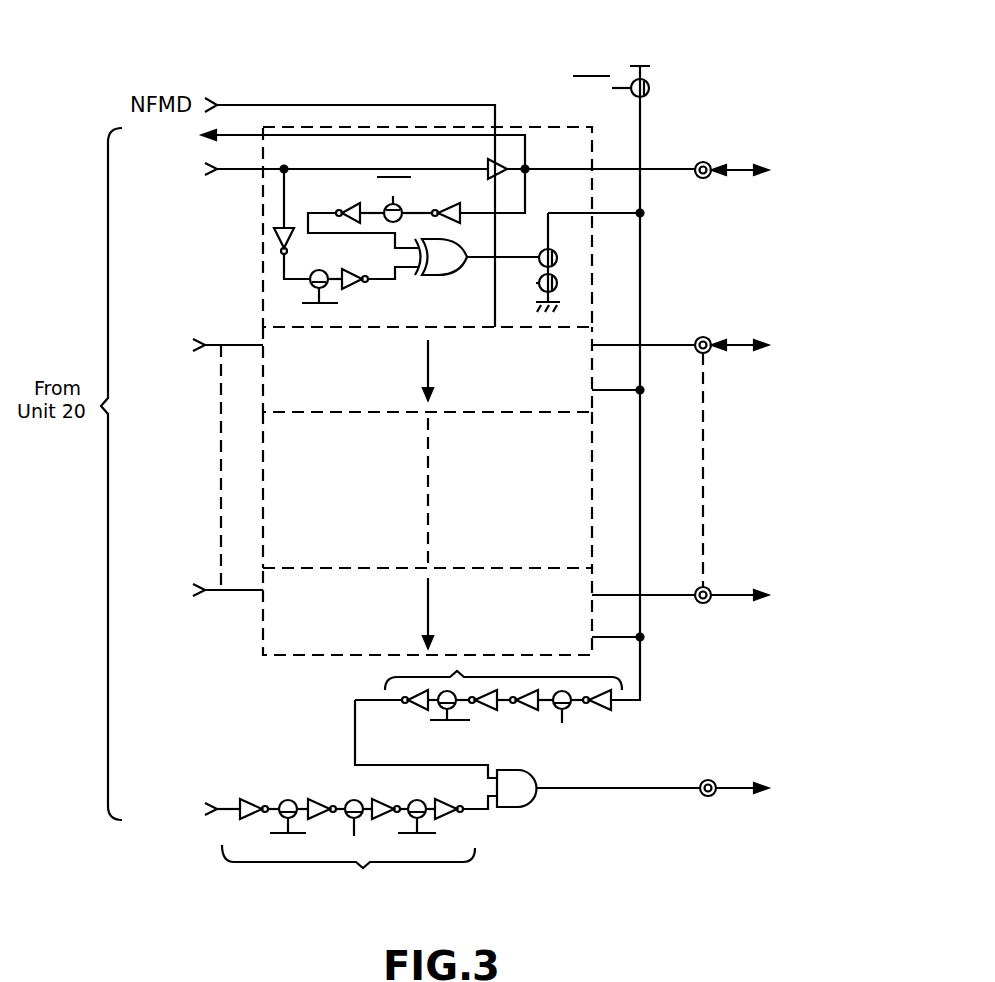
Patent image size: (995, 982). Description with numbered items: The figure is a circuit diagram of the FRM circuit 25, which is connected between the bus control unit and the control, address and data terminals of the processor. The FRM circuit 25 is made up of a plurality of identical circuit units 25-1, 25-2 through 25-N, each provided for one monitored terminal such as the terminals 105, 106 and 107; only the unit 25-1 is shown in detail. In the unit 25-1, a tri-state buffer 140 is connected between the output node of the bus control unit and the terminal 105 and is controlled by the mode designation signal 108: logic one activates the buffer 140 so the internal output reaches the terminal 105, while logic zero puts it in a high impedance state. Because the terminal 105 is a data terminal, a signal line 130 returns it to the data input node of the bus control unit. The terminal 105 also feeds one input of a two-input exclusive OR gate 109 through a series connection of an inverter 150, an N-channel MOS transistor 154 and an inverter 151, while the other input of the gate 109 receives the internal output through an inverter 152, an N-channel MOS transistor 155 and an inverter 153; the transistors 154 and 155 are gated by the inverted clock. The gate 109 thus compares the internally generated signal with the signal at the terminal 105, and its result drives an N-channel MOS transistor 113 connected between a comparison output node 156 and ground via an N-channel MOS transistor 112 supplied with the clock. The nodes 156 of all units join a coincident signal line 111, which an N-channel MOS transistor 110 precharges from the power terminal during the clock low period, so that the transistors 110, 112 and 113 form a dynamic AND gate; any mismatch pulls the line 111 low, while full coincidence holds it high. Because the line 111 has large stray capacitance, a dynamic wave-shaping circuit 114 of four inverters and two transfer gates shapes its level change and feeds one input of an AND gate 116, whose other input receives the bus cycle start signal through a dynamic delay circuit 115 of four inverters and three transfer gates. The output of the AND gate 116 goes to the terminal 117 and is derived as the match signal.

The FRM circuit 25 is at (424, 66).
The circuit unit 25-1 is at (570, 128).
The circuit unit 25-2 is at (578, 370).
The circuit unit 25-N is at (583, 615).
The terminal 105 is at (710, 160).
The terminal 106 is at (710, 337).
The terminal 107 is at (710, 587).
The mode designation signal NFMD 108 is at (248, 104).
The exclusive OR gate 109 is at (452, 276).
The N-channel MOS transistor 110 is at (649, 88).
The coincident signal line 111 is at (640, 150).
The N-channel MOS transistor 112 is at (557, 281).
The N-channel MOS transistor 113 is at (553, 249).
The dynamic wave-shaping circuit 114 is at (457, 672).
The dynamic delay circuit 115 is at (314, 849).
The AND gate 116 is at (528, 807).
The terminal 117 is at (714, 781).
The signal line 130 is at (335, 138).
The tri-state buffer 140 is at (492, 161).
The inverter 150 is at (445, 203).
The inverter 151 is at (347, 203).
The inverter 152 is at (290, 240).
The inverter 153 is at (352, 290).
The N-channel MOS transistor 154 is at (400, 221).
The N-channel MOS transistor 155 is at (328, 266).
The comparison output node 156 is at (648, 213).